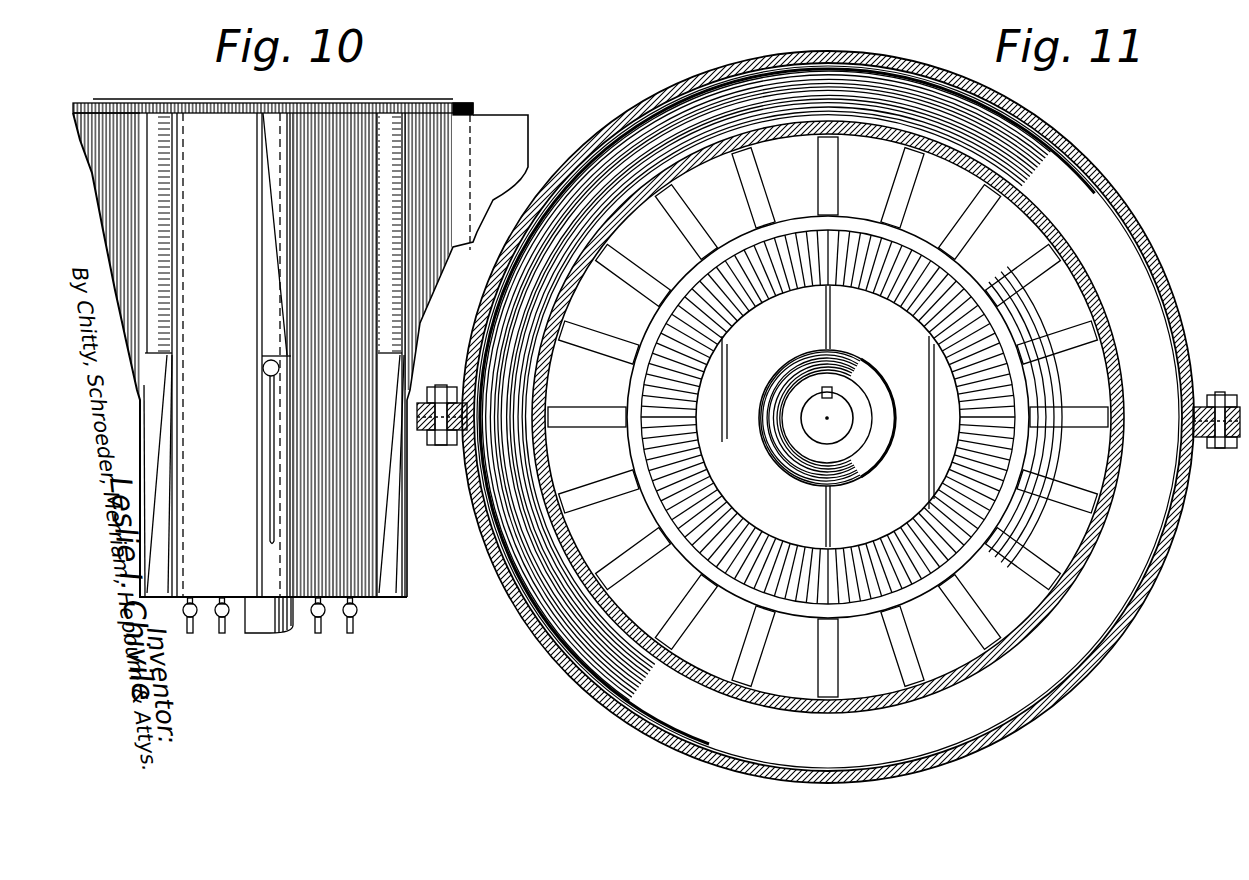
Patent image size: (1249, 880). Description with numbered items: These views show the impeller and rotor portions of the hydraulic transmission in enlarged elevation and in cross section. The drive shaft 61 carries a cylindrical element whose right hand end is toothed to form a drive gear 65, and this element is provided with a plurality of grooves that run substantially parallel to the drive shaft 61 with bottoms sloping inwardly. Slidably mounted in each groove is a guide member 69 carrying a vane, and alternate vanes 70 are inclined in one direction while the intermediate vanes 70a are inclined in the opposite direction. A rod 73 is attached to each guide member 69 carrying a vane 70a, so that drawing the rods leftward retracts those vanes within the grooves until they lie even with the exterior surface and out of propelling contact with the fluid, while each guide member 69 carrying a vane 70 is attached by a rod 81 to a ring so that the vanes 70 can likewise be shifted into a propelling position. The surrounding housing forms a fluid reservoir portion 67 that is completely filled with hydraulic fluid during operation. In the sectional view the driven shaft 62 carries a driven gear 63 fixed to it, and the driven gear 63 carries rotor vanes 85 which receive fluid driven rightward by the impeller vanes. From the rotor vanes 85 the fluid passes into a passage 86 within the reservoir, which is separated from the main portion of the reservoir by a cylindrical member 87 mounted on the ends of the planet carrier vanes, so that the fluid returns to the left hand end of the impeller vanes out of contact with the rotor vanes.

In FIG. 10, the drive shaft 61 is at (262, 626).
In FIG. 11, the driven shaft 62 is at (836, 432).
In FIG. 11, the driven gear 63 is at (1012, 455).
In FIG. 10, the drive gear 65 is at (339, 122).
In FIG. 11, the fluid reservoir portion 67 is at (1104, 273).
In FIG. 10, the guide member 69 is at (258, 287).
In FIG. 10, the vane 70 is at (154, 483).
In FIG. 10, the vane 70a is at (512, 132).
In FIG. 10, the rod 73 is at (272, 433).
In FIG. 10, the rod 81 is at (226, 634).
In FIG. 11, the rotor vanes 85 is at (686, 200).
In FIG. 11, the passage 86 is at (1048, 123).
In FIG. 11, the cylindrical member 87 is at (1030, 201).